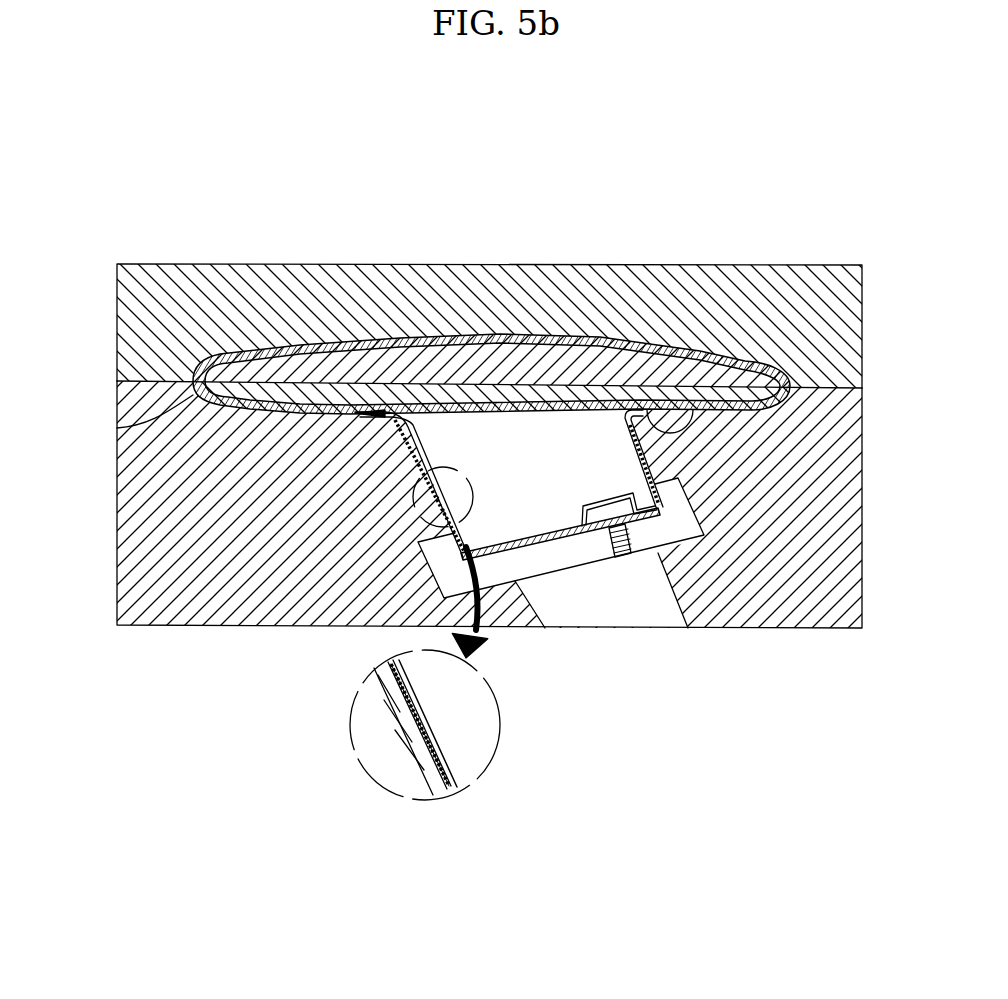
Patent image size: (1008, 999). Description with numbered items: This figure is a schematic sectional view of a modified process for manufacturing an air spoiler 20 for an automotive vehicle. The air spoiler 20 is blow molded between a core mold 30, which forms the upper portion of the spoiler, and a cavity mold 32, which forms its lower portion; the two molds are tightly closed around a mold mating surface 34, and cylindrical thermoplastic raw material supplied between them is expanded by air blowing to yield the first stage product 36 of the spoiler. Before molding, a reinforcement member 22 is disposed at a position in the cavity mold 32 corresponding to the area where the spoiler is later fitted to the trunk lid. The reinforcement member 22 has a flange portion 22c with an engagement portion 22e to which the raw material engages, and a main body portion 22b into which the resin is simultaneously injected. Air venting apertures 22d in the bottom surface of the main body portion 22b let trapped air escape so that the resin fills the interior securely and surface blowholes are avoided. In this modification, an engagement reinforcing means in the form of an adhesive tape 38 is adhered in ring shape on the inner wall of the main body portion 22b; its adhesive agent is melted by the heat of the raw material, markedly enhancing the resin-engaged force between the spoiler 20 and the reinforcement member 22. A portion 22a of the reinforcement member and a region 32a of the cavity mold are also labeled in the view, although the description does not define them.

The air spoiler 20 is at (627, 338).
The reinforcement member 22 is at (690, 540).
The screw of insert 22a is at (630, 560).
The main body portion 22b is at (653, 457).
The flange portion 22c is at (376, 426).
The air venting apertures 22d is at (508, 550).
The engagement portion 22e is at (697, 413).
The core mold 30 is at (355, 285).
The cavity mold 32 is at (152, 575).
The recess of lower mold 32a is at (573, 612).
The mold mating surface 34 is at (490, 388).
The first stage product 36 is at (117, 428).
The adhesive tape 38 is at (435, 757).